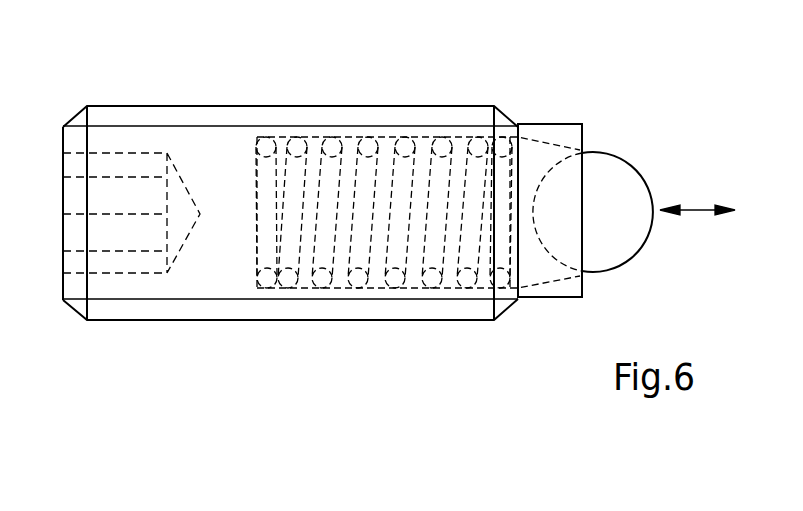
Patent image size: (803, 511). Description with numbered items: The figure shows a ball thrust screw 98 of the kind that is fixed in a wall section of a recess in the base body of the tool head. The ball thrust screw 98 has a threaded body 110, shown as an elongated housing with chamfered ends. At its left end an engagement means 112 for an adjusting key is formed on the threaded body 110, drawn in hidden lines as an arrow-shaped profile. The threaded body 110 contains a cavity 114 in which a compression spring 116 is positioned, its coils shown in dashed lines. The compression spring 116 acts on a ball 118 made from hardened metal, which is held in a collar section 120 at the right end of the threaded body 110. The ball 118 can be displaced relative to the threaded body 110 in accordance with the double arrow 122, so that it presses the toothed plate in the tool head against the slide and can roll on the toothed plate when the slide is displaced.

The ball thrust screw 98 is at (548, 82).
The threaded body 110 is at (245, 320).
The engagement means 112 is at (127, 263).
The cavity 114 is at (307, 263).
The compression spring 116 is at (393, 282).
The ball 118 is at (597, 253).
The collar section 120 is at (555, 290).
The double arrow 122 is at (697, 212).